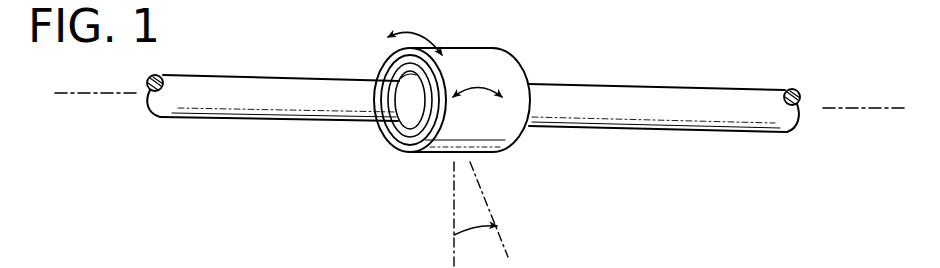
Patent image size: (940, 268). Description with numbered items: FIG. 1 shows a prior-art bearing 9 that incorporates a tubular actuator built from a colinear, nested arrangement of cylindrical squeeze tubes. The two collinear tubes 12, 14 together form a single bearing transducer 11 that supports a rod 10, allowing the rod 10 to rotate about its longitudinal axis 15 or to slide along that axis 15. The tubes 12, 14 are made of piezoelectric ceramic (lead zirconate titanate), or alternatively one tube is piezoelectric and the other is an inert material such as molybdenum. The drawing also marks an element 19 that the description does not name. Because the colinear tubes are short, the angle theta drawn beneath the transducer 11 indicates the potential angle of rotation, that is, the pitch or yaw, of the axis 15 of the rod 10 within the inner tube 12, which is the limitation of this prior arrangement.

The bearing 9 is at (473, 146).
The rod 10 is at (238, 74).
The bearing transducer 11 is at (480, 117).
The inner tube 12 is at (392, 134).
The tube 14 is at (406, 144).
The longitudinal axis 15 is at (98, 93).
The reference surface 19 is at (286, 257).